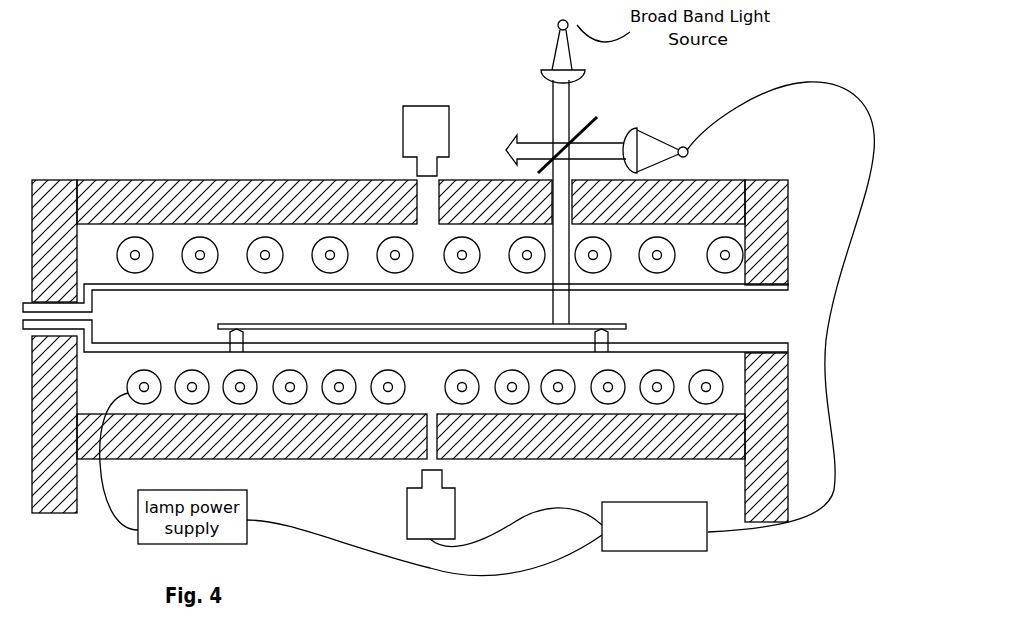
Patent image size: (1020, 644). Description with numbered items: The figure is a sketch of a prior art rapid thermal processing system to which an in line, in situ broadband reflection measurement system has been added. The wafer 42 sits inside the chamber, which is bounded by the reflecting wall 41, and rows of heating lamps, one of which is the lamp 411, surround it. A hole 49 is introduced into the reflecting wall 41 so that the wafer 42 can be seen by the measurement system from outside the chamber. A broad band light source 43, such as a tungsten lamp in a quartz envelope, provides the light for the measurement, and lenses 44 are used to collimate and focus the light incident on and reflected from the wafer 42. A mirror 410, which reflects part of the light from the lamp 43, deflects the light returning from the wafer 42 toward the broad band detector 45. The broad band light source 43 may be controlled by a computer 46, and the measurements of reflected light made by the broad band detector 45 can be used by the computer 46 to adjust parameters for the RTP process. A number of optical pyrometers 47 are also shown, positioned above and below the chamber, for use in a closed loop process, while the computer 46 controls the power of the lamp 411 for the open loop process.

The reflecting wall 41 is at (523, 238).
The lamp 411 is at (130, 374).
The wafer 42 is at (606, 324).
The broad band light source 43 is at (558, 22).
The lenses 44 is at (582, 75).
The broad band detector 45 is at (688, 154).
The computer 46 is at (707, 538).
The optical pyrometers 47 is at (403, 127).
The hole 49 is at (576, 226).
The mirror 410 is at (595, 117).